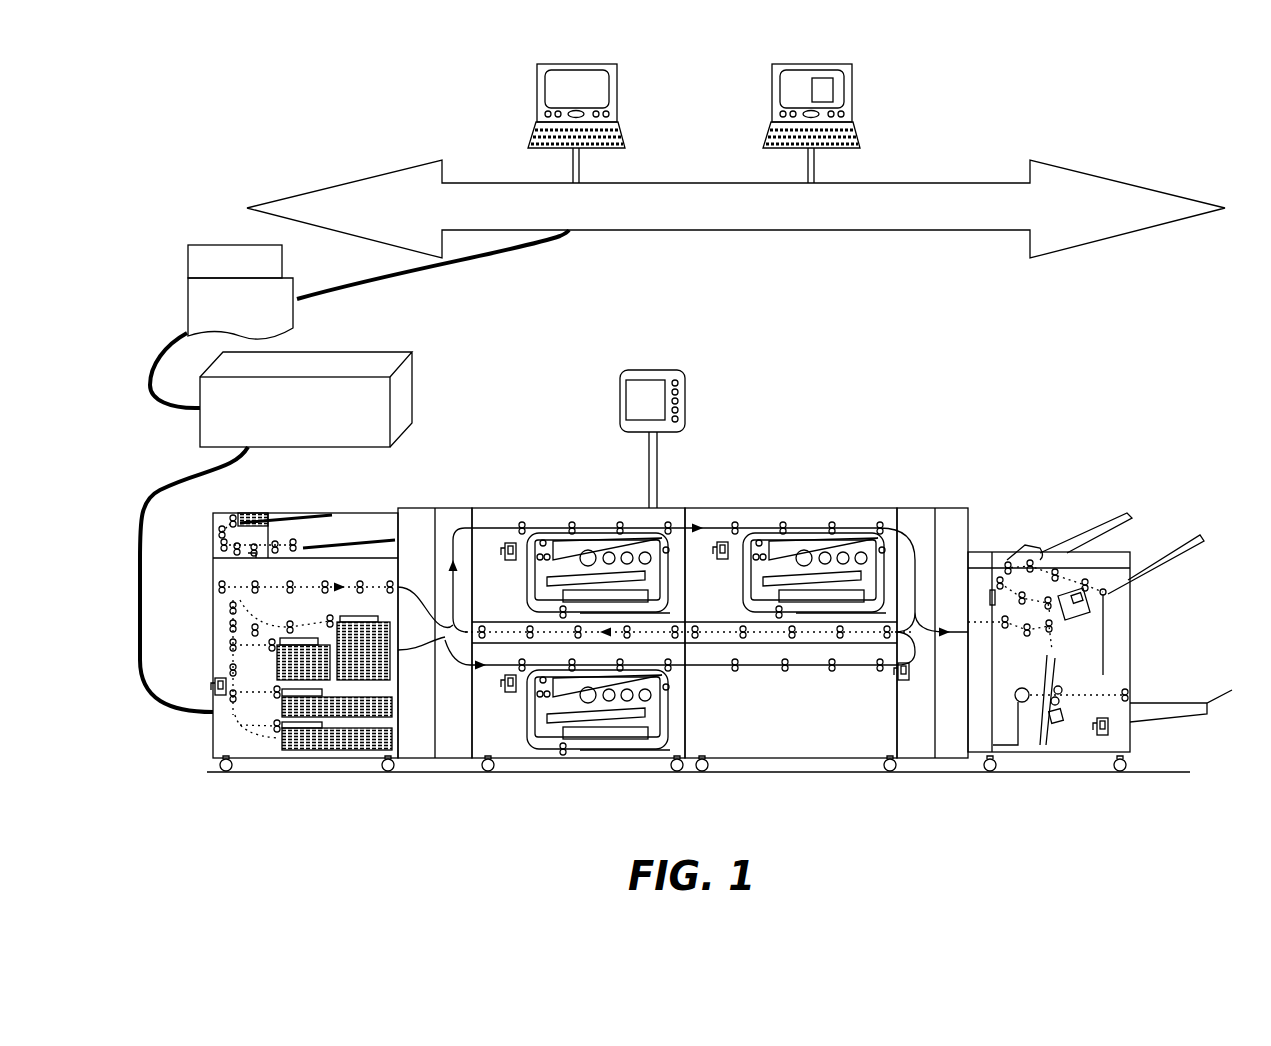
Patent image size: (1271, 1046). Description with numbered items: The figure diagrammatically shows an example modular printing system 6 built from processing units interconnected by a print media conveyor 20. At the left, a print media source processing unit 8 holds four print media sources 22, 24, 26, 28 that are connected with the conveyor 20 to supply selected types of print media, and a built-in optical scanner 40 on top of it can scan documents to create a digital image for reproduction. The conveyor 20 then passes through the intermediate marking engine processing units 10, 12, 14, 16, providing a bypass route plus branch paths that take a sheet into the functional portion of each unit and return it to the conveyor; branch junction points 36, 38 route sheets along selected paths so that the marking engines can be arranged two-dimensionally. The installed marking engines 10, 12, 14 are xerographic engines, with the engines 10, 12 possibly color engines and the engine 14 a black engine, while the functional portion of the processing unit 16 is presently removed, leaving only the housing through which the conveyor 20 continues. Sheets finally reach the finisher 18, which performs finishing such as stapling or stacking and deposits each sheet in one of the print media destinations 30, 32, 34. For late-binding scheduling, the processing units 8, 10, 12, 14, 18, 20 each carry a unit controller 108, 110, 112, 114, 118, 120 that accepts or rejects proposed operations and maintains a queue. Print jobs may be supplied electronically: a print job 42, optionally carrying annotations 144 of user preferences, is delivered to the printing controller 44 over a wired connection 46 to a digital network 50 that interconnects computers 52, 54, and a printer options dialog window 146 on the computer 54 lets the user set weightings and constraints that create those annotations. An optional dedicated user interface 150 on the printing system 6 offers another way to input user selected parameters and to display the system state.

The printing system 6 is at (868, 398).
The print media source processing unit 8 is at (194, 735).
The marking engine 10 is at (572, 512).
The marking engine 12 is at (783, 511).
The marking engine 14 is at (515, 748).
The processing unit 16 is at (728, 745).
The finisher 18 is at (1013, 500).
The print media conveyor 20 is at (700, 660).
The print media source 22 is at (277, 656).
The print media source 24 is at (307, 748).
The print media source 26 is at (340, 706).
The print media source 28 is at (393, 650).
The print media destination 30 is at (1097, 528).
The print media destination 32 is at (1168, 553).
The print media destination 34 is at (1168, 703).
The branch junction point 36 is at (452, 636).
The branch junction point 38 is at (920, 625).
The optical scanner 40 is at (292, 513).
The print job 42 is at (293, 312).
The printing controller 44 is at (402, 398).
The wired connection 46 is at (477, 265).
The digital network 50 is at (838, 222).
The computer 52 is at (537, 100).
The computer 54 is at (772, 100).
The unit controller 108 is at (215, 686).
The unit controller 110 is at (502, 560).
The unit controller 112 is at (722, 562).
The unit controller 114 is at (502, 692).
The unit controller 118 is at (1110, 732).
The unit controller 120 is at (903, 682).
The annotations 144 is at (188, 262).
The printer options dialog window 146 is at (834, 91).
The dedicated user interface 150 is at (652, 370).